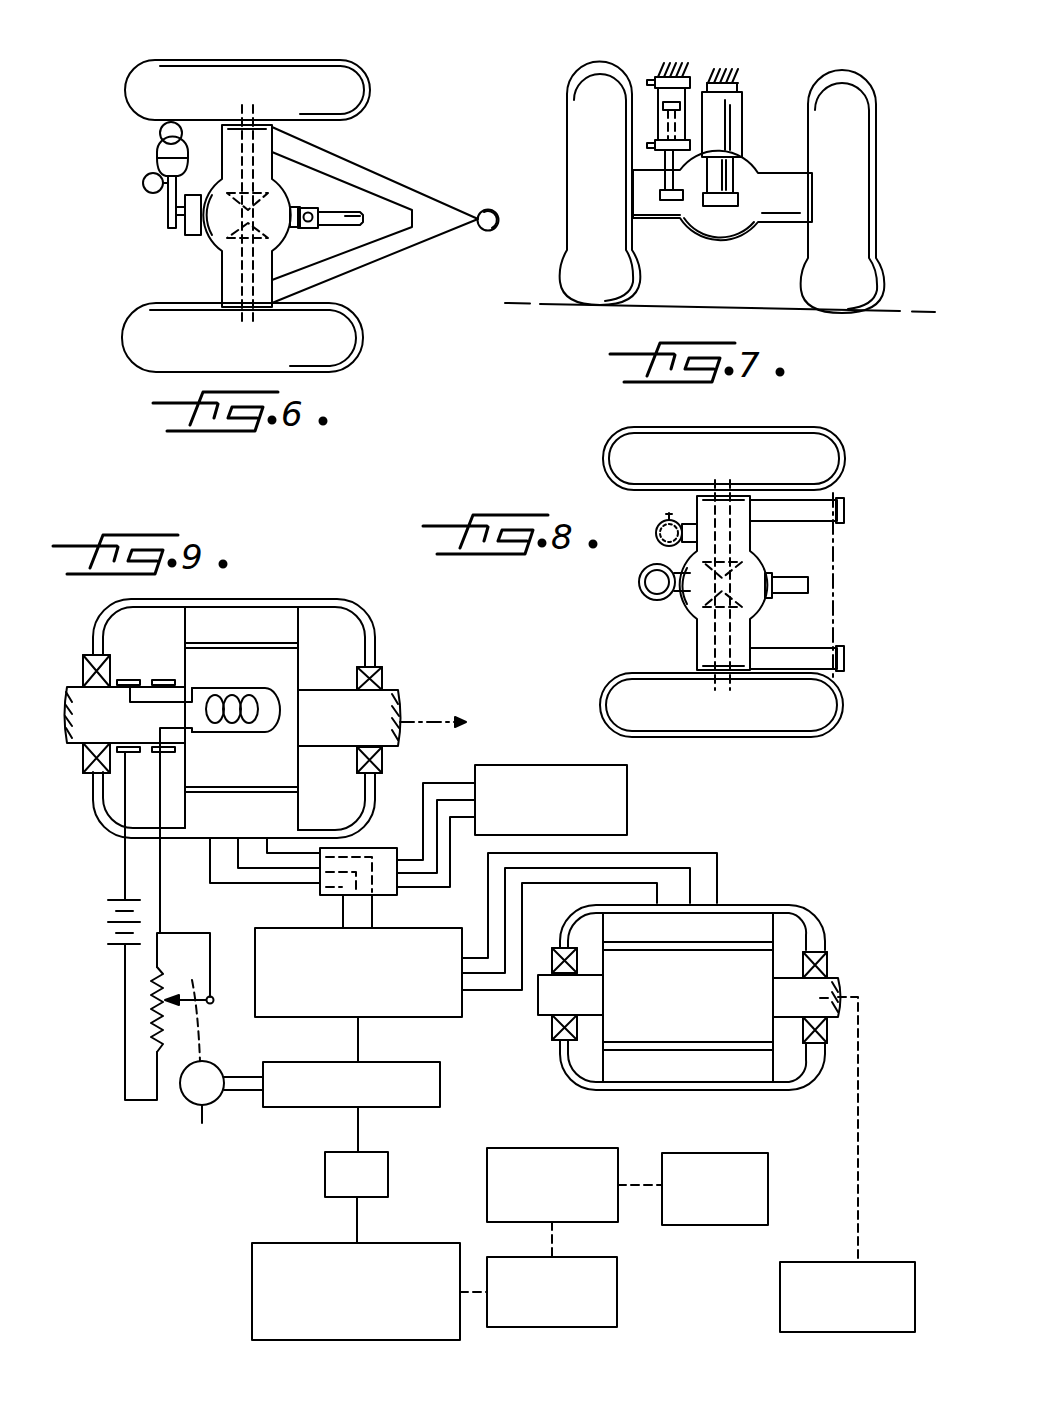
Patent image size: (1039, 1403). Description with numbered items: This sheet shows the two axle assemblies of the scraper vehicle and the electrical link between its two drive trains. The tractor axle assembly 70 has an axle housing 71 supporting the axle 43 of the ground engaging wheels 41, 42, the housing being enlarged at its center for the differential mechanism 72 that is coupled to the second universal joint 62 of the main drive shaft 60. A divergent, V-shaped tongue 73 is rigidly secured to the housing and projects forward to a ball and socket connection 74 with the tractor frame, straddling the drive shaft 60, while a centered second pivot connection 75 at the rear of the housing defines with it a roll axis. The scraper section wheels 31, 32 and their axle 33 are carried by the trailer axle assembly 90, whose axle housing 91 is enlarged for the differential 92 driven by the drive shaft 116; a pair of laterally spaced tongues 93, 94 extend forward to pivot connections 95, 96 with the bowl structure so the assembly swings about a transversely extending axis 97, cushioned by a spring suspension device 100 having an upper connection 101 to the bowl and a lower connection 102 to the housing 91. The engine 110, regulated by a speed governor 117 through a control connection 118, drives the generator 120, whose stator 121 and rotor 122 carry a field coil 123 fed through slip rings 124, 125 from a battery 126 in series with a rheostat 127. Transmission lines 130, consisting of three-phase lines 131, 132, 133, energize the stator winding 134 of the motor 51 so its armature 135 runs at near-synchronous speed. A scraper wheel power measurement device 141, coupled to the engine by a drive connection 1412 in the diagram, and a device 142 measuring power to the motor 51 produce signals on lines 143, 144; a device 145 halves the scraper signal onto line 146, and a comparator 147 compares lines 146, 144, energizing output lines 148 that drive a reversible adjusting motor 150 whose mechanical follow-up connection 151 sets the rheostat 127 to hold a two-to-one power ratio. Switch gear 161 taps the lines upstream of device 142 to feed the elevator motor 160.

In FIG. 7, the scraper section wheel 31 is at (878, 106).
In FIG. 8, the scraper section wheel 31 is at (846, 706).
In FIG. 9, the scraper section wheel 31 is at (595, 1292).
In FIG. 7, the scraper section wheel 32 is at (570, 114).
In FIG. 8, the scraper section wheel 32 is at (818, 432).
In FIG. 9, the scraper section wheel 32 is at (617, 1284).
In FIG. 8, the axle 33 is at (718, 642).
In FIG. 6, the ground engaging wheel 41 is at (126, 318).
In FIG. 9, the ground engaging wheel 41 is at (794, 1297).
In FIG. 6, the ground engaging wheel 42 is at (152, 60).
In FIG. 9, the ground engaging wheel 42 is at (780, 1300).
In FIG. 6, the axle 43 is at (282, 153).
In FIG. 9, the motor 51 is at (711, 976).
In FIG. 6, the main drive shaft 60 is at (358, 226).
In FIG. 6, the second universal joint 62 is at (325, 206).
In FIG. 6, the tractor axle assembly 70 is at (224, 143).
In FIG. 6, the axle housing 71 is at (222, 276).
In FIG. 6, the differential mechanism 72 is at (272, 228).
In FIG. 6, the tongue 73 is at (400, 188).
In FIG. 6, the ball and socket connection 74 is at (493, 208).
In FIG. 6, the second pivot connection 75 is at (168, 216).
In FIG. 8, the trailer axle assembly 90 is at (850, 558).
In FIG. 7, the axle housing 91 is at (768, 177).
In FIG. 8, the axle housing 91 is at (697, 658).
In FIG. 8, the differential 92 is at (762, 578).
In FIG. 8, the tongue 93 is at (773, 521).
In FIG. 8, the tongue 94 is at (792, 648).
In FIG. 8, the pivot connection 95 is at (845, 510).
In FIG. 8, the pivot connection 96 is at (845, 661).
In FIG. 8, the transversely extending axis 97 is at (838, 616).
In FIG. 7, the spring suspension device 100 is at (742, 119).
In FIG. 8, the spring suspension device 100 is at (651, 598).
In FIG. 7, the upper connection 101 is at (737, 83).
In FIG. 7, the lower connection 102 is at (727, 206).
In FIG. 9, the engine 110 is at (570, 1148).
In FIG. 8, the drive shaft 116 is at (810, 586).
In FIG. 9, the speed governor 117 is at (730, 1153).
In FIG. 9, the control connection 118 is at (640, 1185).
In FIG. 9, the generator 120 is at (268, 705).
In FIG. 9, the stator 121 is at (283, 617).
In FIG. 9, the rotor 122 is at (300, 682).
In FIG. 9, the field coil 123 is at (246, 690).
In FIG. 9, the slip ring 124 is at (130, 680).
In FIG. 9, the slip ring 125 is at (175, 752).
In FIG. 9, the battery 126 is at (112, 903).
In FIG. 9, the rheostat 127 is at (192, 980).
In FIG. 9, the transmission lines 130 is at (599, 903).
In FIG. 9, the three-phase line 131 is at (614, 883).
In FIG. 9, the three-phase line 132 is at (678, 868).
In FIG. 9, the three-phase line 133 is at (720, 880).
In FIG. 9, the stator winding 134 is at (783, 930).
In FIG. 9, the armature 135 is at (722, 1004).
In FIG. 9, the scraper wheel power measurement device 141 is at (375, 1243).
In FIG. 9, the power measuring device 142 is at (292, 928).
In FIG. 9, the line 143 is at (357, 1222).
In FIG. 9, the line 144 is at (360, 1048).
In FIG. 9, the dividing device 145 is at (325, 1175).
In FIG. 9, the line 146 is at (360, 1138).
In FIG. 9, the comparator 147 is at (440, 1086).
In FIG. 9, the output lines 148 is at (234, 1093).
In FIG. 9, the adjusting motor 150 is at (188, 1100).
In FIG. 9, the mechanical follow-up connection 151 is at (197, 1032).
In FIG. 9, the motor 160 is at (527, 765).
In FIG. 9, the switch gear 161 is at (360, 848).
In FIG. 9, the drive connection 1412 is at (556, 1240).